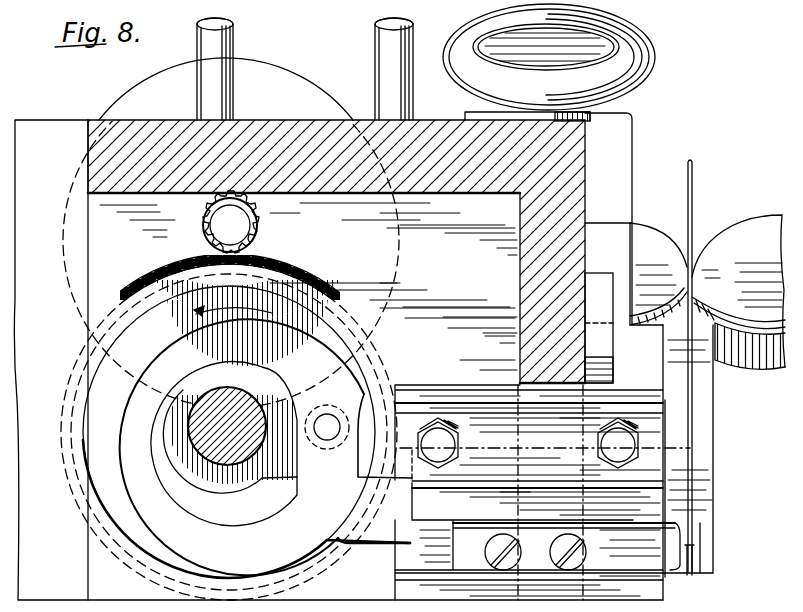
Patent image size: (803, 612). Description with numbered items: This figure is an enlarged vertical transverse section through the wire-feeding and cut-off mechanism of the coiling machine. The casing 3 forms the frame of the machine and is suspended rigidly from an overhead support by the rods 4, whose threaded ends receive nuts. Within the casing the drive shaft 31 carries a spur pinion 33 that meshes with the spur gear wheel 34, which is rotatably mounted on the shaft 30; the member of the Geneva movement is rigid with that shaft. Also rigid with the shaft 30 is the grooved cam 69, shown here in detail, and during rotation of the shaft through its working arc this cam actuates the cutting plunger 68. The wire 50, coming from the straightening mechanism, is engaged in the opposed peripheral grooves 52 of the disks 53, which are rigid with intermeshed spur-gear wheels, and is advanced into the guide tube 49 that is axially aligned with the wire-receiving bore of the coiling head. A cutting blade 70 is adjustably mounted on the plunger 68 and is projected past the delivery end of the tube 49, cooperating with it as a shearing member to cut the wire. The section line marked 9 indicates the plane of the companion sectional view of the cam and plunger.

The casing 3 is at (588, 187).
The rods 4 is at (235, 40).
The section line of FIG. 9 is at (127, 261).
The shaft 30 is at (207, 452).
The drive shaft 31 is at (253, 226).
The spur pinion 33 is at (208, 222).
The spur gear wheel 34 is at (284, 263).
The guide tube 49 is at (717, 459).
The wire 50 is at (694, 211).
The peripheral grooves 52 is at (677, 300).
The disks 53 is at (670, 232).
The cutting plunger 68 is at (540, 496).
The grooved cam 69 is at (358, 368).
The cutting blade 70 is at (678, 568).